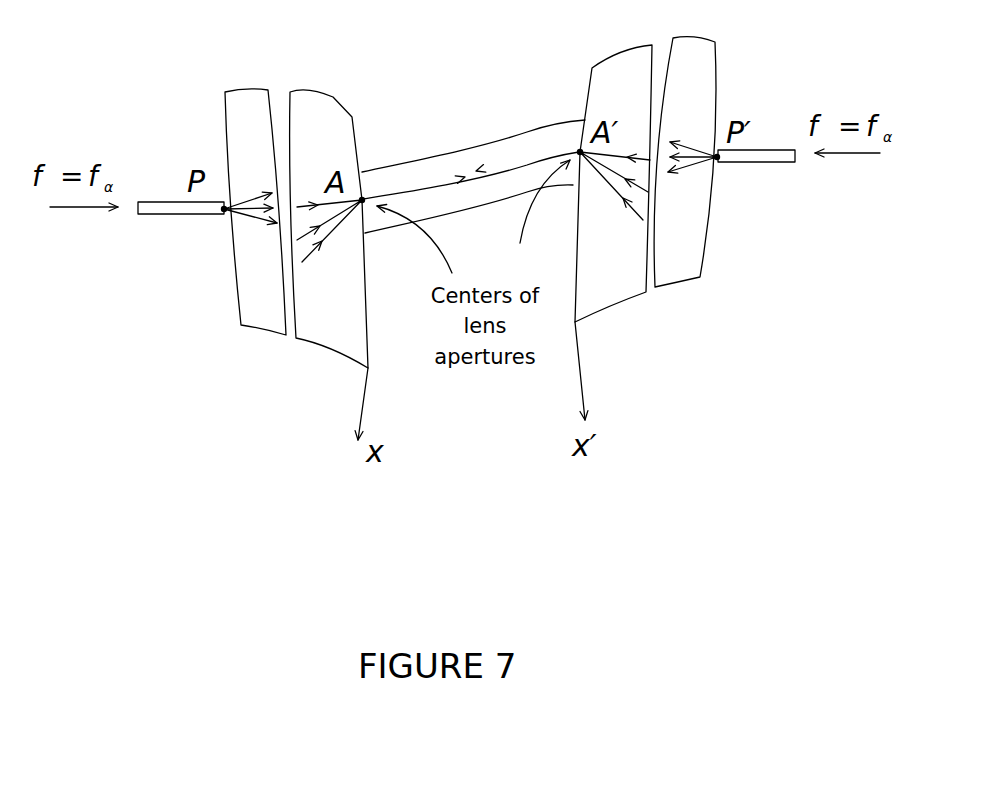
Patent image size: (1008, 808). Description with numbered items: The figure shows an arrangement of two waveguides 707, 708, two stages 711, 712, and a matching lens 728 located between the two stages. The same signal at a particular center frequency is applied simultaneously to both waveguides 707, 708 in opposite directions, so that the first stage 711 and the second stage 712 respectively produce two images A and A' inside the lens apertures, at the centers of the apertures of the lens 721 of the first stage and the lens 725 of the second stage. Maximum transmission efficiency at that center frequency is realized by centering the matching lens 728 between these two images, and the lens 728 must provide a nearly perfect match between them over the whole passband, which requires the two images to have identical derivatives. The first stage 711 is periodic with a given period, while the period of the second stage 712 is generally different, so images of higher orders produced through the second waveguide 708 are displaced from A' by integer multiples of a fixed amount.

The waveguide 707 is at (198, 215).
The waveguide 708 is at (759, 163).
The first stage 711 is at (267, 261).
The second stage 712 is at (684, 215).
The lens 721 is at (230, 277).
The lens 725 is at (723, 178).
The matching lens 728 is at (428, 155).